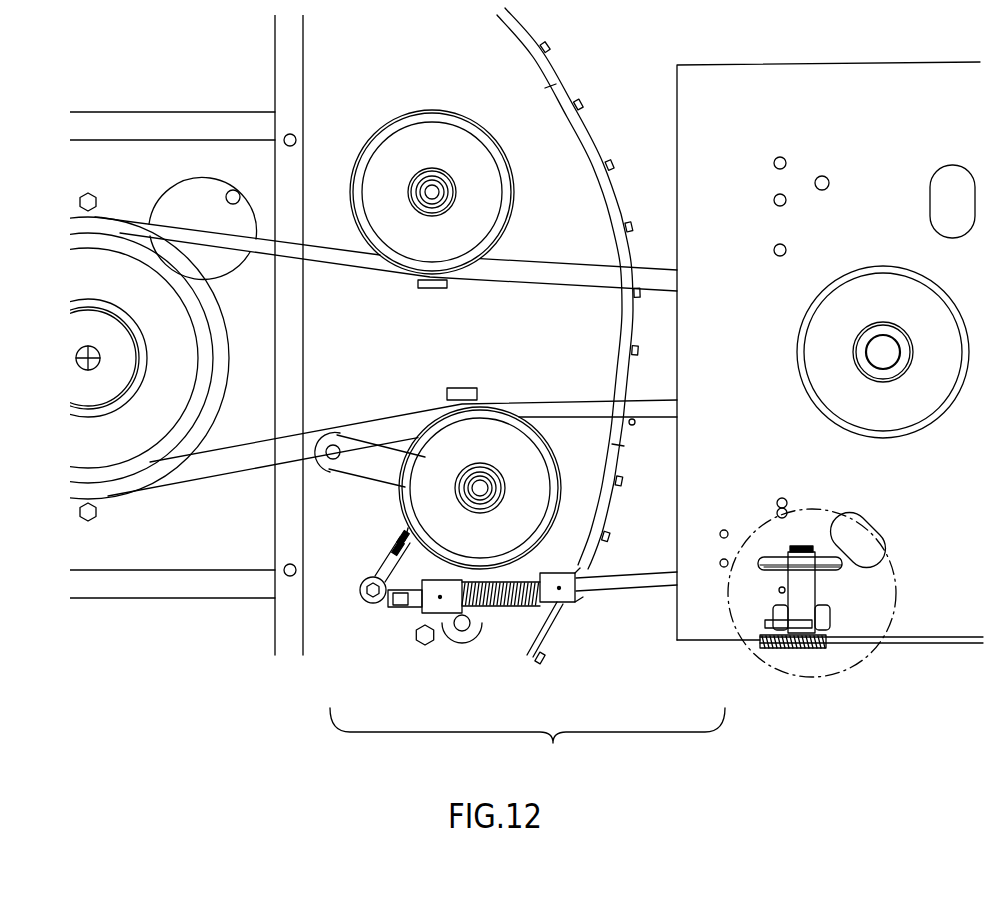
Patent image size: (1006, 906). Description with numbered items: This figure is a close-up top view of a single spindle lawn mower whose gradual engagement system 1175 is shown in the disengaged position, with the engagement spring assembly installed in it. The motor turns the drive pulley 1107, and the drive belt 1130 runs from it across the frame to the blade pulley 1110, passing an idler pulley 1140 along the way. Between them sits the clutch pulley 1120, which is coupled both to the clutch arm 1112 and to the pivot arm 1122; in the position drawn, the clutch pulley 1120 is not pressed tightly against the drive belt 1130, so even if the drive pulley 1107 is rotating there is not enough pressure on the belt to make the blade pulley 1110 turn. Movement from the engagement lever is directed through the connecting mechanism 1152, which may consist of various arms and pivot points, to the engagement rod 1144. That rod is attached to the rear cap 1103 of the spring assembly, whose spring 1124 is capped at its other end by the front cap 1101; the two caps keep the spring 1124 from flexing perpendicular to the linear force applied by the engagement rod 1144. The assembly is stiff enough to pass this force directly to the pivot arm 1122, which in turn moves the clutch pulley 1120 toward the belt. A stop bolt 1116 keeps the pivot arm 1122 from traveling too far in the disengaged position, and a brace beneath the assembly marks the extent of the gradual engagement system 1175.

The blade pulley 1110 is at (120, 262).
The idler pulley 1140 is at (428, 135).
The drive belt 1130 is at (402, 423).
The clutch pulley 1120 is at (530, 485).
The clutch arm 1112 is at (372, 463).
The pivot arm 1122 is at (410, 613).
The stop bolt 1116 is at (425, 646).
The front cap 1101 is at (457, 600).
The spring 1124 is at (543, 605).
The rear cap 1103 is at (583, 597).
The engagement rod 1144 is at (632, 582).
The drive pulley 1107 is at (890, 293).
The connecting mechanism 1152 is at (818, 676).
The gradual engagement system 1175 is at (527, 745).